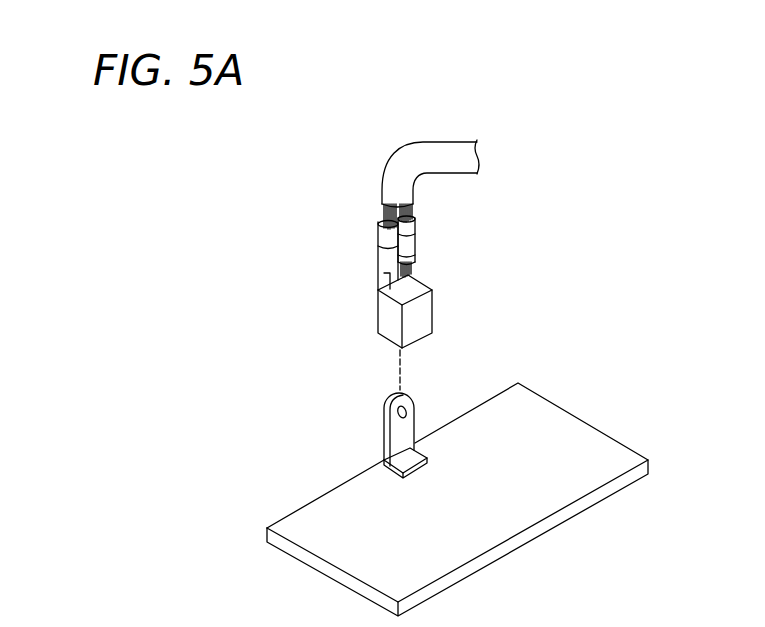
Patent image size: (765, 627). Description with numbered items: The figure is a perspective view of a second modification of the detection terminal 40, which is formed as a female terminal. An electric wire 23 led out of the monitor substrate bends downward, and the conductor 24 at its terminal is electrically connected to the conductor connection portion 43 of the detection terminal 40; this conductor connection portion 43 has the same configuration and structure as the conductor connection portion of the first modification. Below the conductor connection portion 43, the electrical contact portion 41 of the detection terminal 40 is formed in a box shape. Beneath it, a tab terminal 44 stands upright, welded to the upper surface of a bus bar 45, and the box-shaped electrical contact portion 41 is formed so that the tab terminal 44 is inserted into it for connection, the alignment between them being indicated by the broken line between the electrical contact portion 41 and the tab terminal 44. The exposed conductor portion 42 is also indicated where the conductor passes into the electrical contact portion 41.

The electric wire 23 is at (442, 141).
The conductor 24 is at (383, 212).
The detection terminal 40 is at (273, 262).
The electrical contact portion 41 is at (433, 318).
The exposed conductor 42 is at (398, 283).
The conductor connection portion 43 is at (416, 234).
The tab terminal 44 is at (383, 423).
The bus bar 45 is at (571, 433).